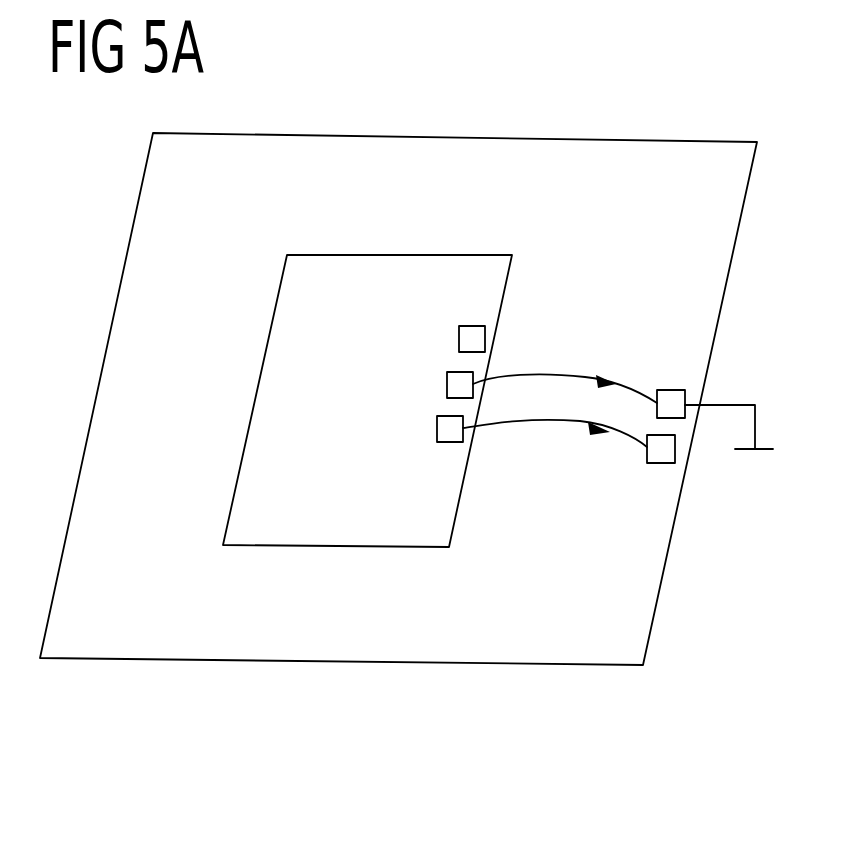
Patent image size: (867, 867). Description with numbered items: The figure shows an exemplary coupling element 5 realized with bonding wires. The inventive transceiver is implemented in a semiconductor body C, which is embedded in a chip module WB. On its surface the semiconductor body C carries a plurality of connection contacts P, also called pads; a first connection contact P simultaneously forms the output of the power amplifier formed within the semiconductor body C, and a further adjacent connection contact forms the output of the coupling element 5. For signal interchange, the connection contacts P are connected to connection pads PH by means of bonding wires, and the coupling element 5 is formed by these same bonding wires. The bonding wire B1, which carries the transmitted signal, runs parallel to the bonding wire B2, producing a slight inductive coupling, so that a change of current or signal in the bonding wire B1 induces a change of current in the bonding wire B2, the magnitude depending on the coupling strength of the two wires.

The coupling element 5 is at (560, 372).
The chip module WB is at (568, 667).
The semiconductor body C is at (338, 547).
The connection contact P is at (458, 340).
The connection pad PH is at (682, 390).
The bonding wire B1 is at (520, 423).
The bonding wire B2 is at (585, 372).